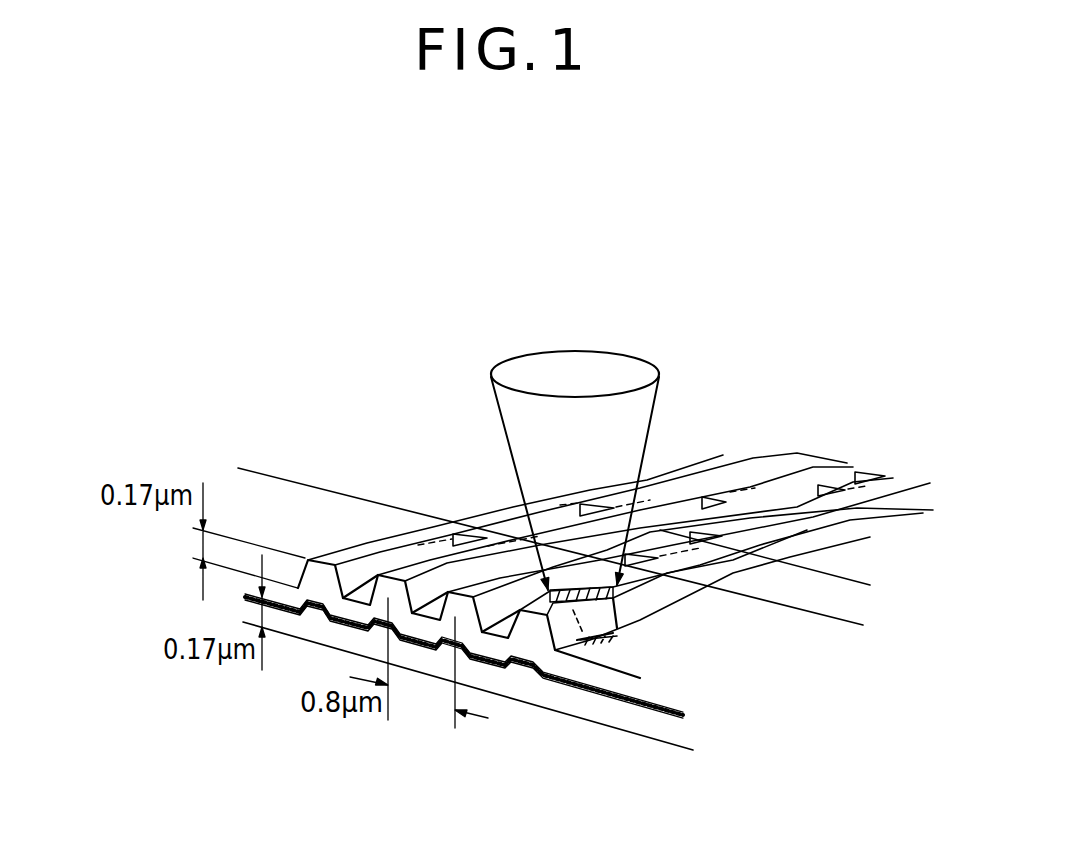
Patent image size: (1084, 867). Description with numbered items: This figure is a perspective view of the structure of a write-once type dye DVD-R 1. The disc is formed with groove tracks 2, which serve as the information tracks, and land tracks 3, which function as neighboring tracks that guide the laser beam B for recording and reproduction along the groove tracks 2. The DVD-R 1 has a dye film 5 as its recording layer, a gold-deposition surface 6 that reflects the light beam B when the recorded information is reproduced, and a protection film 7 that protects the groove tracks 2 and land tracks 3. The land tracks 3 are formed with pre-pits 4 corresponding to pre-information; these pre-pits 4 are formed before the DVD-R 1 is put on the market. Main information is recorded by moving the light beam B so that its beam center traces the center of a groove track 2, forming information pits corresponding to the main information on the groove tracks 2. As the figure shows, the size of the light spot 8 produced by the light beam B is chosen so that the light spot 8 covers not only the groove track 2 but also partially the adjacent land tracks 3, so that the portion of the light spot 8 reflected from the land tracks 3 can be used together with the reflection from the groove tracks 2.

The DVD-R 1 is at (442, 212).
The groove tracks 2 is at (400, 575).
The land tracks 3 is at (363, 600).
The pre-pits 4 is at (443, 543).
The dye film 5 is at (672, 692).
The gold-deposition surface 6 is at (618, 692).
The protection film 7 is at (248, 477).
The light spot 8 is at (615, 608).
The light beam B is at (660, 400).